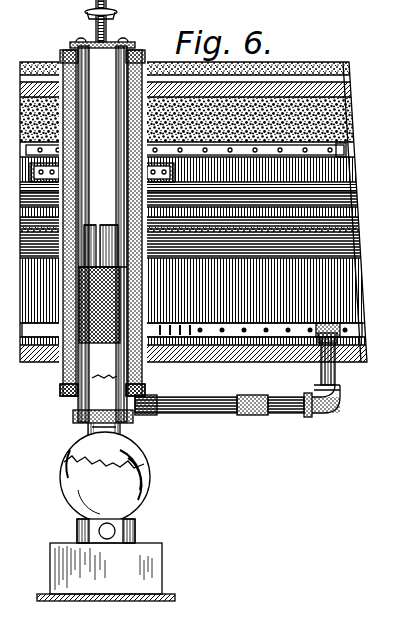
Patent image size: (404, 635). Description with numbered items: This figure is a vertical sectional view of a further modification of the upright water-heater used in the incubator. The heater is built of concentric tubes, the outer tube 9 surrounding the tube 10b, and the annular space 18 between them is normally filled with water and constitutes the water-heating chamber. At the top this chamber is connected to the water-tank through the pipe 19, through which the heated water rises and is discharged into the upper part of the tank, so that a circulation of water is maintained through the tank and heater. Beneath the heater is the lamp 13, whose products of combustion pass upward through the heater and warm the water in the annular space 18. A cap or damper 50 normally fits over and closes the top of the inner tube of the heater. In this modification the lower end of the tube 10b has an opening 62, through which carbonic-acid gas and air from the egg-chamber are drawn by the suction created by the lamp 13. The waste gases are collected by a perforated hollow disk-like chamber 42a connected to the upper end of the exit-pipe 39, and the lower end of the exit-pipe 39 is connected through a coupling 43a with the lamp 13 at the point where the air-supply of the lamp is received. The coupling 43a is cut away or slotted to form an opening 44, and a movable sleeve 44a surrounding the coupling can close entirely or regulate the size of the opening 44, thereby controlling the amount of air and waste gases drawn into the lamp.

The cap or damper 50 is at (123, 42).
The pipe 19 is at (24, 172).
The annular space 18 is at (76, 376).
The outer tube 9 is at (143, 368).
The tube 10b is at (148, 389).
The coupling 43a is at (190, 406).
The movable sleeve 44a is at (239, 407).
The opening 44 is at (260, 411).
The exit-pipe 39 is at (320, 373).
The perforated hollow disk-like chamber 42a is at (331, 330).
The opening 62 is at (136, 414).
The lamp 13 is at (137, 518).